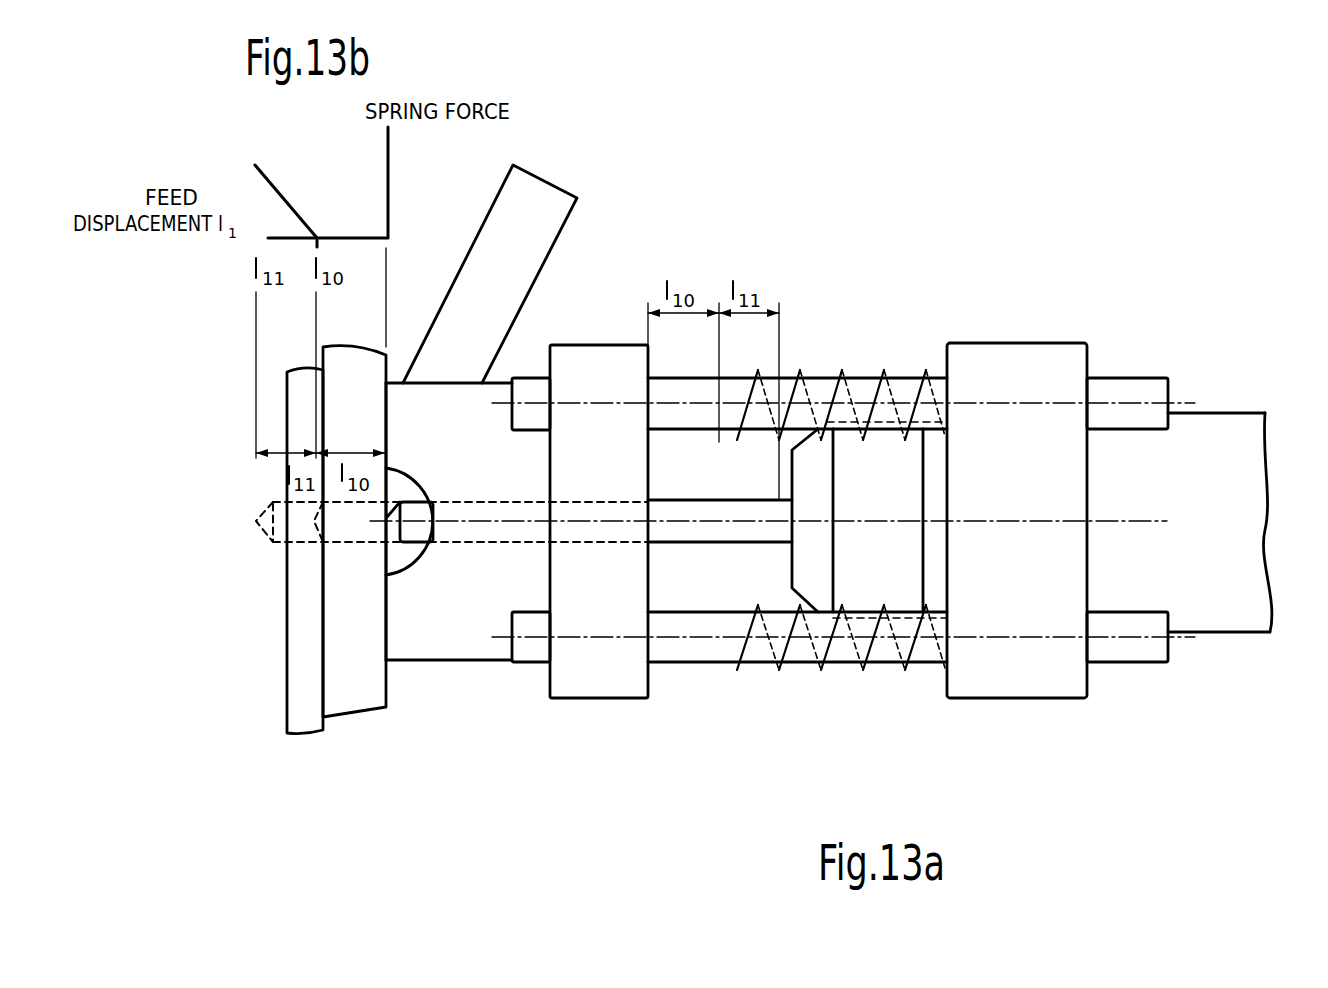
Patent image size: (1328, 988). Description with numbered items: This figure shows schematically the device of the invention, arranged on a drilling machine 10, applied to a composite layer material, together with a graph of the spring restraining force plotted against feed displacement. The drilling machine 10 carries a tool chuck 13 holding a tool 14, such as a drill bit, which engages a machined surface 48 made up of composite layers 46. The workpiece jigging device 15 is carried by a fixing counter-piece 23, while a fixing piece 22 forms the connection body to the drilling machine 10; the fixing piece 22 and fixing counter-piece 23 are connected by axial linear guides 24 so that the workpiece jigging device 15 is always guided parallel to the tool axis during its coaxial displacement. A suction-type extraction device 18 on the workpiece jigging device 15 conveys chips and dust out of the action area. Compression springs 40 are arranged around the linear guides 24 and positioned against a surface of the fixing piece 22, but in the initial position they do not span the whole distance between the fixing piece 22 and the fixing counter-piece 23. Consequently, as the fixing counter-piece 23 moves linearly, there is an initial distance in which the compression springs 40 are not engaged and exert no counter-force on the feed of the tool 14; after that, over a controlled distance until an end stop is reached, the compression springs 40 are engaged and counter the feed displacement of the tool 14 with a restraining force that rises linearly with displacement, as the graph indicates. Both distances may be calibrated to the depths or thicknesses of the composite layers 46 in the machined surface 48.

The drilling machine 10 is at (1232, 600).
The tool chuck 13 is at (808, 458).
The tool 14 is at (675, 530).
The workpiece jigging device 15 is at (425, 630).
The suction-type extraction device 18 is at (538, 212).
The fixing piece 22 is at (1008, 353).
The fixing counter-piece 23 is at (650, 683).
The linear guides 24 is at (848, 589).
The compression springs 40 is at (787, 655).
The composite layers 46 is at (360, 688).
The machined surface 48 is at (380, 720).